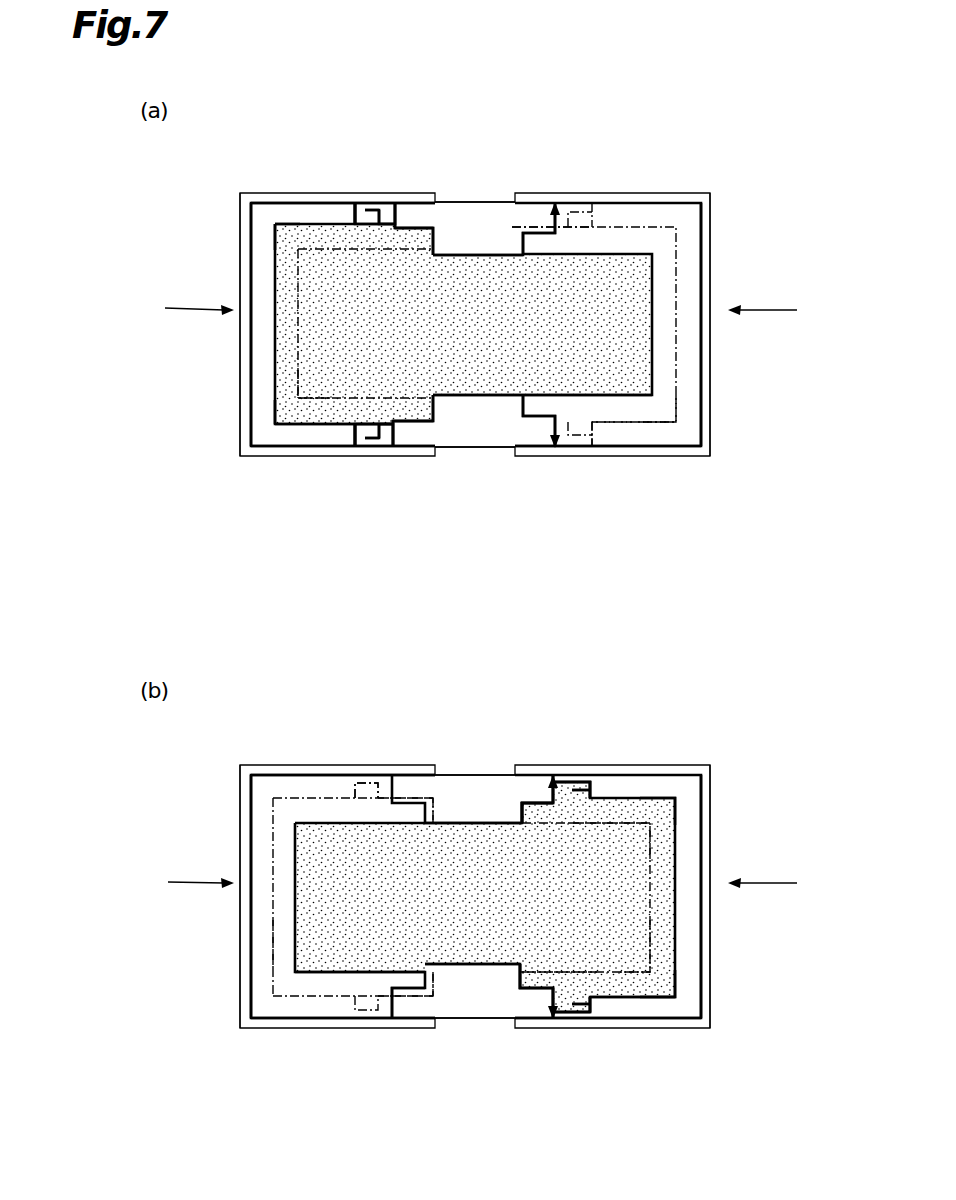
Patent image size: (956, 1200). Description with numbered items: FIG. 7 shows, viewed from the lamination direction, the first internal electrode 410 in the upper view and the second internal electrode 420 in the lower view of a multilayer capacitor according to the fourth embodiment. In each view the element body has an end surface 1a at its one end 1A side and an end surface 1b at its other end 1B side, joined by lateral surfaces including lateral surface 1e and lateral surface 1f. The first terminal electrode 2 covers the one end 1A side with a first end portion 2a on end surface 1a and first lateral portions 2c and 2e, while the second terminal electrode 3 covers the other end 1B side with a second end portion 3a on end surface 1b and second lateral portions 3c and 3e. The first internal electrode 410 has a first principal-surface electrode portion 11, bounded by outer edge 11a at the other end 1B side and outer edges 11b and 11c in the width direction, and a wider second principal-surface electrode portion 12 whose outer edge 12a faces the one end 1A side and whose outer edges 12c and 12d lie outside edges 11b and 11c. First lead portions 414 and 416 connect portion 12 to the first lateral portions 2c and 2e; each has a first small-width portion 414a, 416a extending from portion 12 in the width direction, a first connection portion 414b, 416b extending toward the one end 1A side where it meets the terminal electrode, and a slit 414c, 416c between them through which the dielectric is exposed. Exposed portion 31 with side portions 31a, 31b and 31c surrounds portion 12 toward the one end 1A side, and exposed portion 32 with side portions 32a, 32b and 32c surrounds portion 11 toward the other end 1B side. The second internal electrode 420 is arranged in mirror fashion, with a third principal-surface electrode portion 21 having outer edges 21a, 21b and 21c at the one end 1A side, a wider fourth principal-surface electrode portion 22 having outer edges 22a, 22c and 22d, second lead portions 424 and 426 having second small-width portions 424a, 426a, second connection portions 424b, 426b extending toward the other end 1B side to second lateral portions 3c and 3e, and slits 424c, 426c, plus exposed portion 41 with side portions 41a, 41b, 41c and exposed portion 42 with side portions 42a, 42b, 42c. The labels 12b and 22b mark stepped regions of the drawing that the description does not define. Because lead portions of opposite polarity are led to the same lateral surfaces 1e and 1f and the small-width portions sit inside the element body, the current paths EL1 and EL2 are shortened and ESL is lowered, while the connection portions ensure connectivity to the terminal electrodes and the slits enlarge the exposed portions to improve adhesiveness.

The one end 1A is at (183, 592).
The other end 1B is at (772, 593).
The end surface 1a is at (243, 352).
The end surface 1b is at (708, 352).
The lateral surface 1e is at (514, 450).
The lateral surface 1f is at (505, 200).
The first terminal electrode 2 is at (238, 200).
The first end portion 2a is at (246, 285).
The first lateral portion 2c is at (318, 450).
The first lateral portion 2e is at (330, 203).
The second terminal electrode 3 is at (712, 202).
The second end portion 3a is at (705, 290).
The second lateral portion 3c is at (615, 447).
The second lateral portion 3e is at (588, 212).
The first principal-surface electrode portion 11 is at (590, 302).
The outer edge 11a is at (660, 392).
The outer edge 11b is at (560, 440).
The outer edge 11c is at (558, 228).
The second principal-surface electrode portion 12 is at (312, 300).
The outer edge 12a is at (275, 382).
The stepped portion of first internal electrode 12b is at (465, 250).
The outer edge 12c is at (275, 432).
The outer edge 12d is at (270, 222).
The exposed portion 31 is at (260, 260).
The side portion 31a is at (296, 405).
The side portion 31b is at (302, 432).
The side portion 31c is at (322, 218).
The exposed portion 32 is at (696, 258).
The side portion 32a is at (680, 420).
The side portion 32b is at (472, 435).
The side portion 32c is at (470, 226).
The first internal electrode 410 is at (650, 243).
The first lead portion 414 is at (398, 516).
The first small-width portion 414a is at (418, 447).
The first connection portion 414b is at (368, 438).
The slit 414c is at (340, 440).
The first lead portion 416 is at (398, 133).
The first small-width portion 416a is at (400, 218).
The first connection portion 416b is at (382, 212).
The slit 416c is at (365, 207).
The current path EL1 is at (493, 400).
The current path EL2 is at (473, 262).
The second internal electrode 420 is at (668, 788).
The third principal-surface electrode portion 21 is at (328, 857).
The outer edge 21a is at (300, 968).
The outer edge 21b is at (348, 1000).
The outer edge 21c is at (365, 790).
The fourth principal-surface electrode portion 22 is at (627, 848).
The outer edge 22a is at (662, 965).
The stepped portion of second internal electrode 22b is at (500, 808).
The outer edge 22c is at (680, 1000).
The outer edge 22d is at (655, 797).
The exposed portion 41 is at (695, 834).
The side portion 41a is at (660, 945).
The side portion 41b is at (655, 985).
The side portion 41c is at (624, 822).
The exposed portion 42 is at (260, 829).
The side portion 42a is at (275, 945).
The side portion 42b is at (478, 1000).
The side portion 42c is at (483, 800).
The second lead portion 424 is at (563, 1062).
The second small-width portion 424a is at (545, 1005).
The second connection portion 424b is at (580, 1012).
The slit 424c is at (605, 1012).
The second lead portion 426 is at (550, 710).
The second small-width portion 426a is at (538, 800).
The second connection portion 426b is at (572, 788).
The slit 426c is at (596, 797).